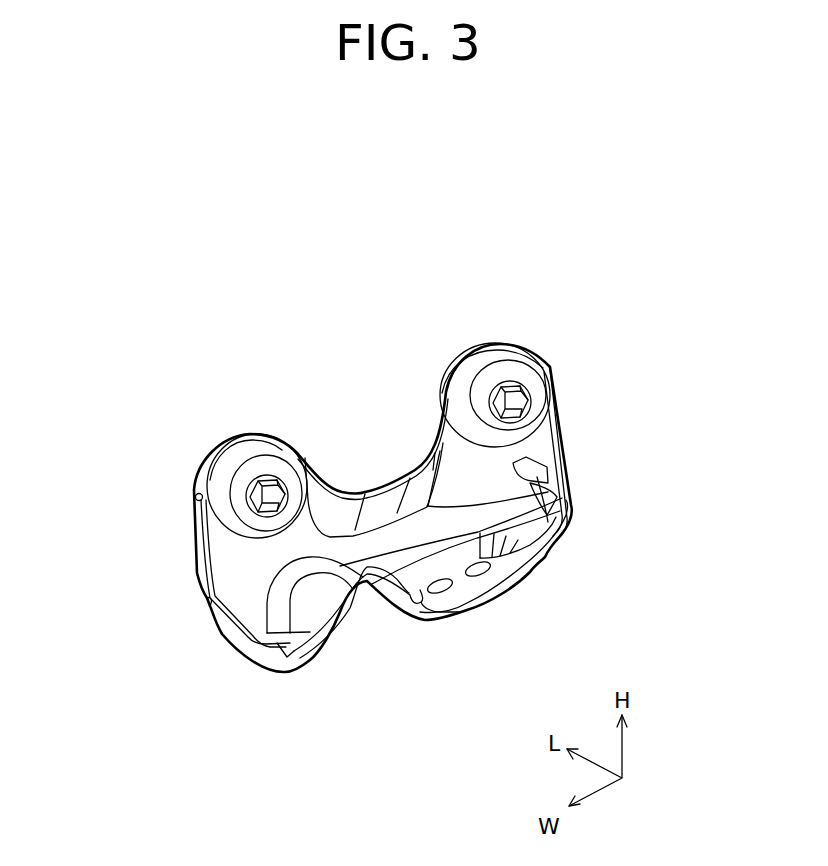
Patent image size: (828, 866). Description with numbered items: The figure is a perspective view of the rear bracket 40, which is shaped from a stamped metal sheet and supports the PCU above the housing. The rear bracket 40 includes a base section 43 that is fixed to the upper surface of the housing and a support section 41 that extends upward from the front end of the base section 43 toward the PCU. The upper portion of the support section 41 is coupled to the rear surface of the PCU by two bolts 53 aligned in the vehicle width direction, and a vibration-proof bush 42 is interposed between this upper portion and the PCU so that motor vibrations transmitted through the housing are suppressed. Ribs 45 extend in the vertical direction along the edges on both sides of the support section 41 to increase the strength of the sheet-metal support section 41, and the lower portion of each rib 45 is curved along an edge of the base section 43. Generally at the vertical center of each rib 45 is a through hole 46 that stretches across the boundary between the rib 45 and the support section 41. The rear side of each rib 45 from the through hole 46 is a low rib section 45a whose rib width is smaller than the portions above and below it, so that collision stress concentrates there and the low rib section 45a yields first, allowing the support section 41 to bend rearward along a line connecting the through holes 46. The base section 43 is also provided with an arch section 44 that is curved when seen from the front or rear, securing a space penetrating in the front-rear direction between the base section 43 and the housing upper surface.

The rear bracket 40 is at (333, 328).
The support section 41 is at (458, 483).
The vibration-proof bush 42 is at (257, 472).
The base section 43 is at (462, 580).
The arch section 44 is at (368, 638).
The rib 45 is at (543, 447).
The low rib section 45a is at (227, 558).
The through hole 46 is at (543, 473).
The bolt 53 is at (283, 500).